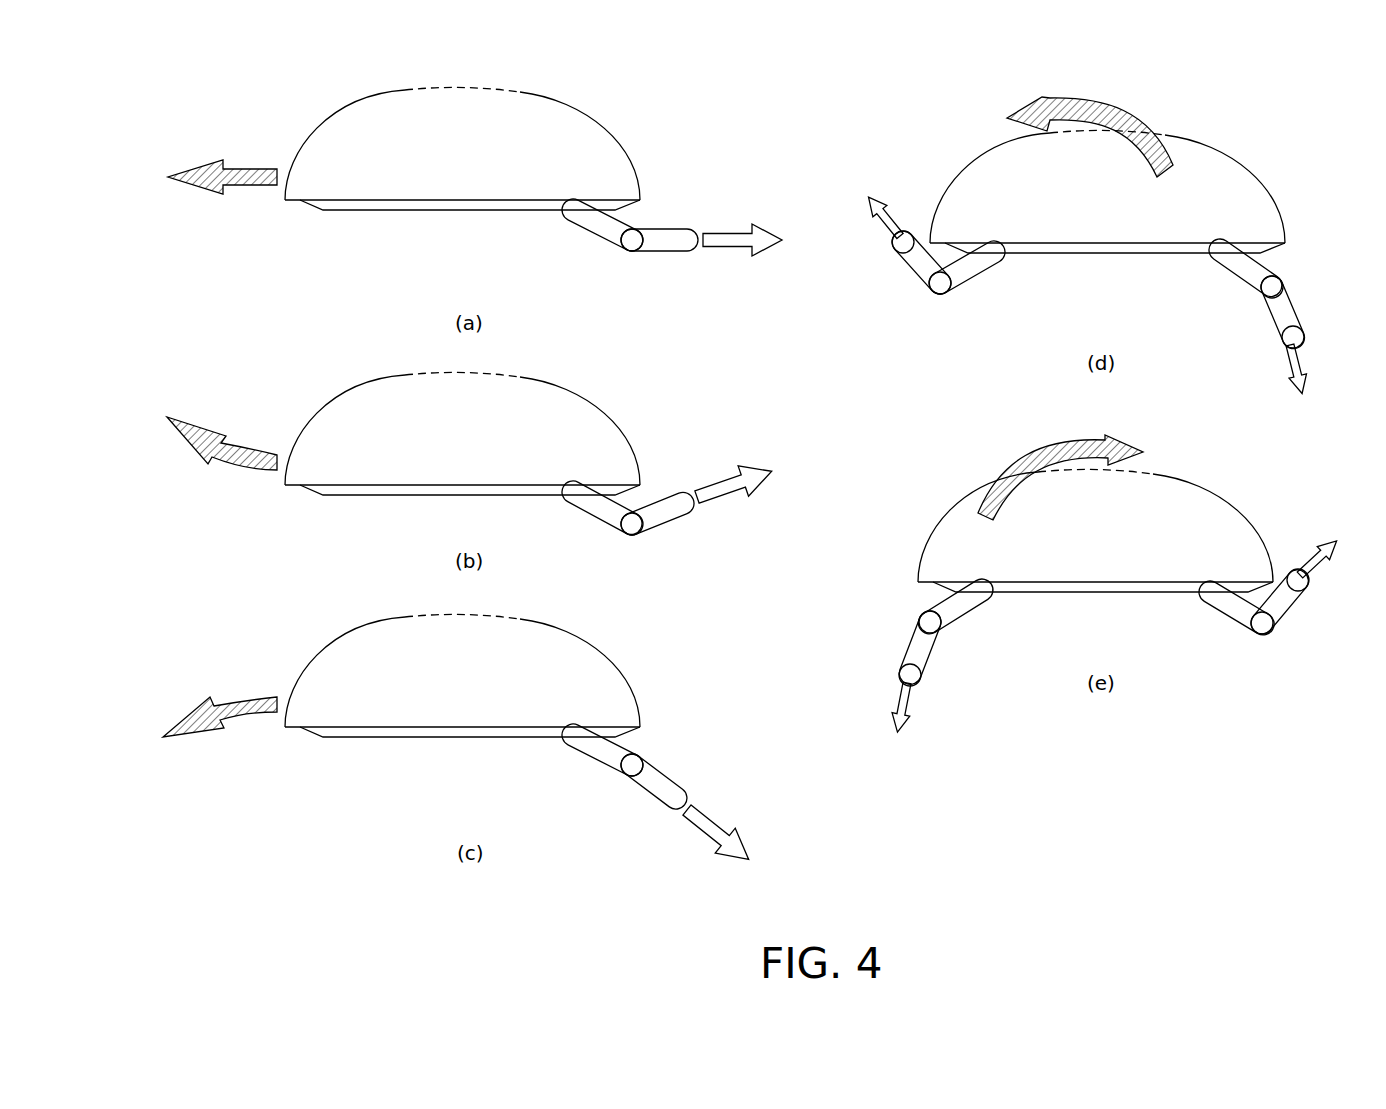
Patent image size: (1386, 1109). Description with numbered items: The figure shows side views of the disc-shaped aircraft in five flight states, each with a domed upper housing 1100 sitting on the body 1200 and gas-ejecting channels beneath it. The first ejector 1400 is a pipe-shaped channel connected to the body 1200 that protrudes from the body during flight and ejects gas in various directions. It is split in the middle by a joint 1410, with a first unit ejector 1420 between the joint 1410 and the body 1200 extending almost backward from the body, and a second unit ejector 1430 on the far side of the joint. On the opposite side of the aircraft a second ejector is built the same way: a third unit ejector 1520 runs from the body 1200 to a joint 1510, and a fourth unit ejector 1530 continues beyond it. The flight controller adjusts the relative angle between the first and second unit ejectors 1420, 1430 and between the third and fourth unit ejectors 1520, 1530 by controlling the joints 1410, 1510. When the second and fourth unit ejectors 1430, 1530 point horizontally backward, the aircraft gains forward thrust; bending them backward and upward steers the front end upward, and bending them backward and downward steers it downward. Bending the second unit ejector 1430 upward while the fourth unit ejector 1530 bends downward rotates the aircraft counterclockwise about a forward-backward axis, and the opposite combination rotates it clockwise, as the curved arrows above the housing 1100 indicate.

The housing 1100 is at (367, 128).
The body 1200 is at (393, 205).
The first ejector 1400 is at (732, 511).
The joint 1410 is at (632, 242).
The first unit ejector 1420 is at (612, 233).
The second unit ejector 1430 is at (673, 245).
The joint 1510 is at (1262, 290).
The third unit ejector 1520 is at (1228, 265).
The fourth unit ejector 1530 is at (1283, 312).